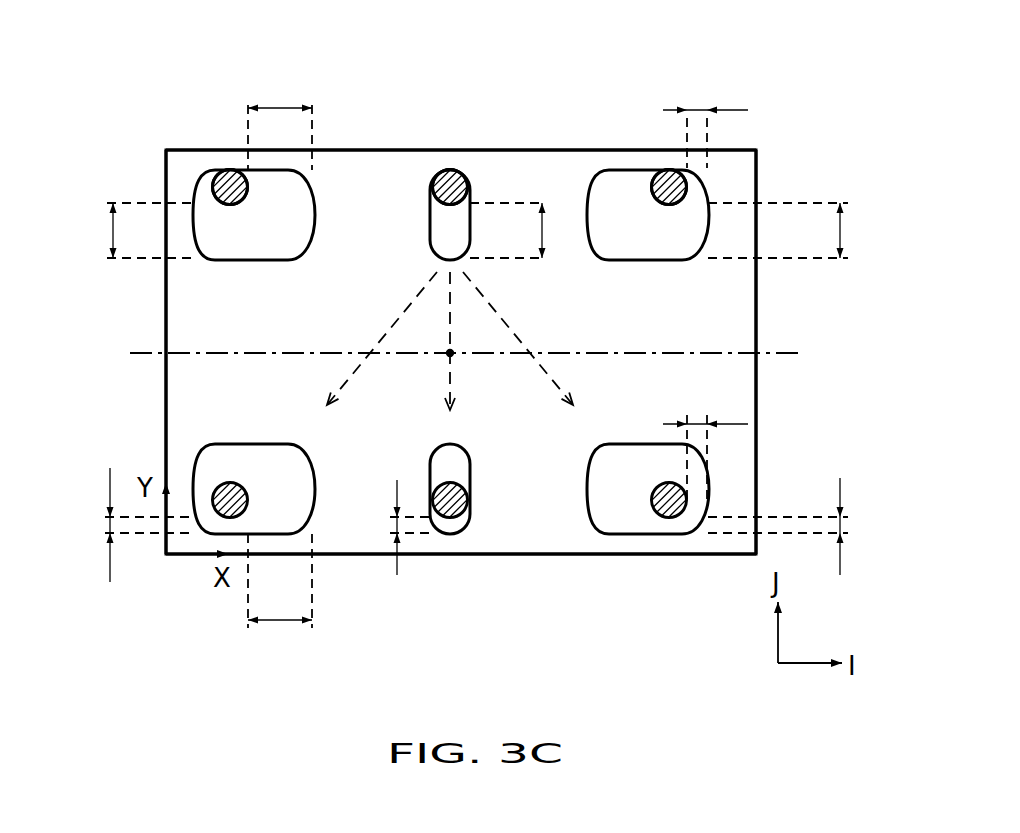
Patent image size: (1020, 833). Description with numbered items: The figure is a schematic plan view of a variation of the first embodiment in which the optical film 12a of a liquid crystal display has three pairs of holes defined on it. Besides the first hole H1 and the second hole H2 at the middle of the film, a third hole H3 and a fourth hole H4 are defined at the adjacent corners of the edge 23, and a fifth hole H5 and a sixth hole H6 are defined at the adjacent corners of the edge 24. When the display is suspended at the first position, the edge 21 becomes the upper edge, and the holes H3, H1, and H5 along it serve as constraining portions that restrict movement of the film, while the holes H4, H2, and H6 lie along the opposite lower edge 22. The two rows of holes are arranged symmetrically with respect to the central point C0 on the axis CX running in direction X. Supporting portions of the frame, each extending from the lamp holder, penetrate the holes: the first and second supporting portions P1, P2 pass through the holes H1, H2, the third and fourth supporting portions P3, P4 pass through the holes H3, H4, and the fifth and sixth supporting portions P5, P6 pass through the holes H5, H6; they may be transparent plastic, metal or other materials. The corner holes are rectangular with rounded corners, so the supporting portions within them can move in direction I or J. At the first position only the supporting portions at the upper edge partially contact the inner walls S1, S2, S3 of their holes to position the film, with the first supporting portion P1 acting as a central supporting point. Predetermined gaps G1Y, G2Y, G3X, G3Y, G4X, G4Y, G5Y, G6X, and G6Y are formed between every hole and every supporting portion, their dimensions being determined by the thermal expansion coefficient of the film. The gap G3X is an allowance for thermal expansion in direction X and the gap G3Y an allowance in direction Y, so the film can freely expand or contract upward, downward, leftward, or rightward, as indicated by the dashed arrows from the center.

The optical film 12a is at (197, 150).
The edge 21 is at (540, 150).
The edge 22 is at (560, 557).
The edge 23 is at (163, 405).
The edge 24 is at (757, 414).
The first hole H1 is at (430, 217).
The second hole H2 is at (462, 533).
The third hole H3 is at (210, 181).
The fourth hole H4 is at (193, 448).
The fifth hole H5 is at (607, 173).
The sixth hole H6 is at (623, 535).
The inner wall S1 is at (452, 172).
The inner wall S2 is at (228, 172).
The inner wall S3 is at (657, 172).
The first supporting portion P1 is at (472, 192).
The second supporting portion P2 is at (472, 517).
The third supporting portion P3 is at (213, 188).
The fourth supporting portion P4 is at (237, 483).
The fifth supporting portion P5 is at (657, 188).
The sixth supporting portion P6 is at (665, 518).
The axis CX is at (483, 358).
The central point C0 is at (467, 371).
The gap G1Y is at (508, 230).
The gap G2Y is at (385, 527).
The gap G3X is at (498, 123).
The gap G3Y is at (126, 230).
The gap G4X is at (280, 581).
The gap G4Y is at (124, 525).
The gap G5Y is at (778, 230).
The gap G6X is at (705, 444).
The gap G6Y is at (778, 524).